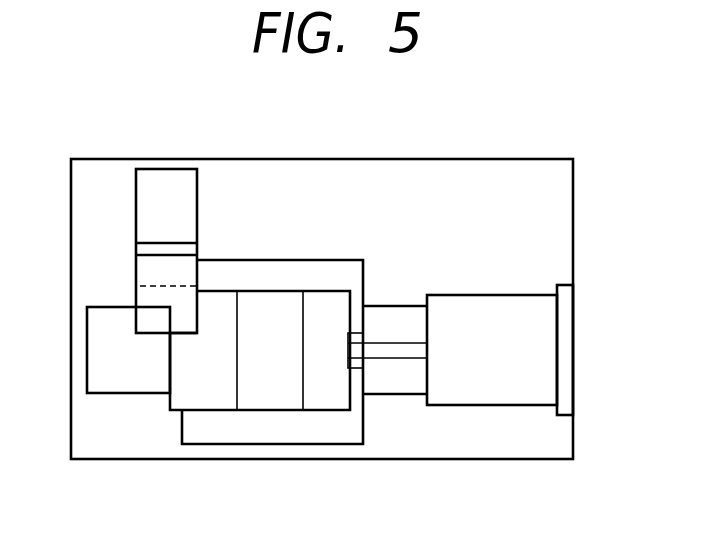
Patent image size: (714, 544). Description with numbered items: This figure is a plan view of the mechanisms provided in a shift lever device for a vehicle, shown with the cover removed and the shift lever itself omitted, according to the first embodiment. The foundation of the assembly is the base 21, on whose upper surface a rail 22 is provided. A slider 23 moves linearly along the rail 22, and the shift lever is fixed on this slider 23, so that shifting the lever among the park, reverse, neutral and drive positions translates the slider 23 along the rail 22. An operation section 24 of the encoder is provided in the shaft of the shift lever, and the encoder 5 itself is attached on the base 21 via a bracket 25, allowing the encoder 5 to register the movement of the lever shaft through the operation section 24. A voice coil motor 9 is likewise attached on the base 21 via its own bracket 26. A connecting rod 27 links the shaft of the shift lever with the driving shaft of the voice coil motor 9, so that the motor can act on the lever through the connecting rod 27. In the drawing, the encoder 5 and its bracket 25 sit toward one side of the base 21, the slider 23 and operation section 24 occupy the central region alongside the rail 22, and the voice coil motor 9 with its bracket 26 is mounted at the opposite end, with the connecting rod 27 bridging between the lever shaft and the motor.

The encoder 5 is at (142, 270).
The voice coil motor 9 is at (525, 300).
The base 21 is at (558, 215).
The rail 22 is at (402, 397).
The slider 23 is at (338, 270).
The operation section 24 is at (180, 402).
The bracket 25 is at (175, 175).
The bracket 26 is at (567, 303).
The connecting rod 27 is at (327, 402).